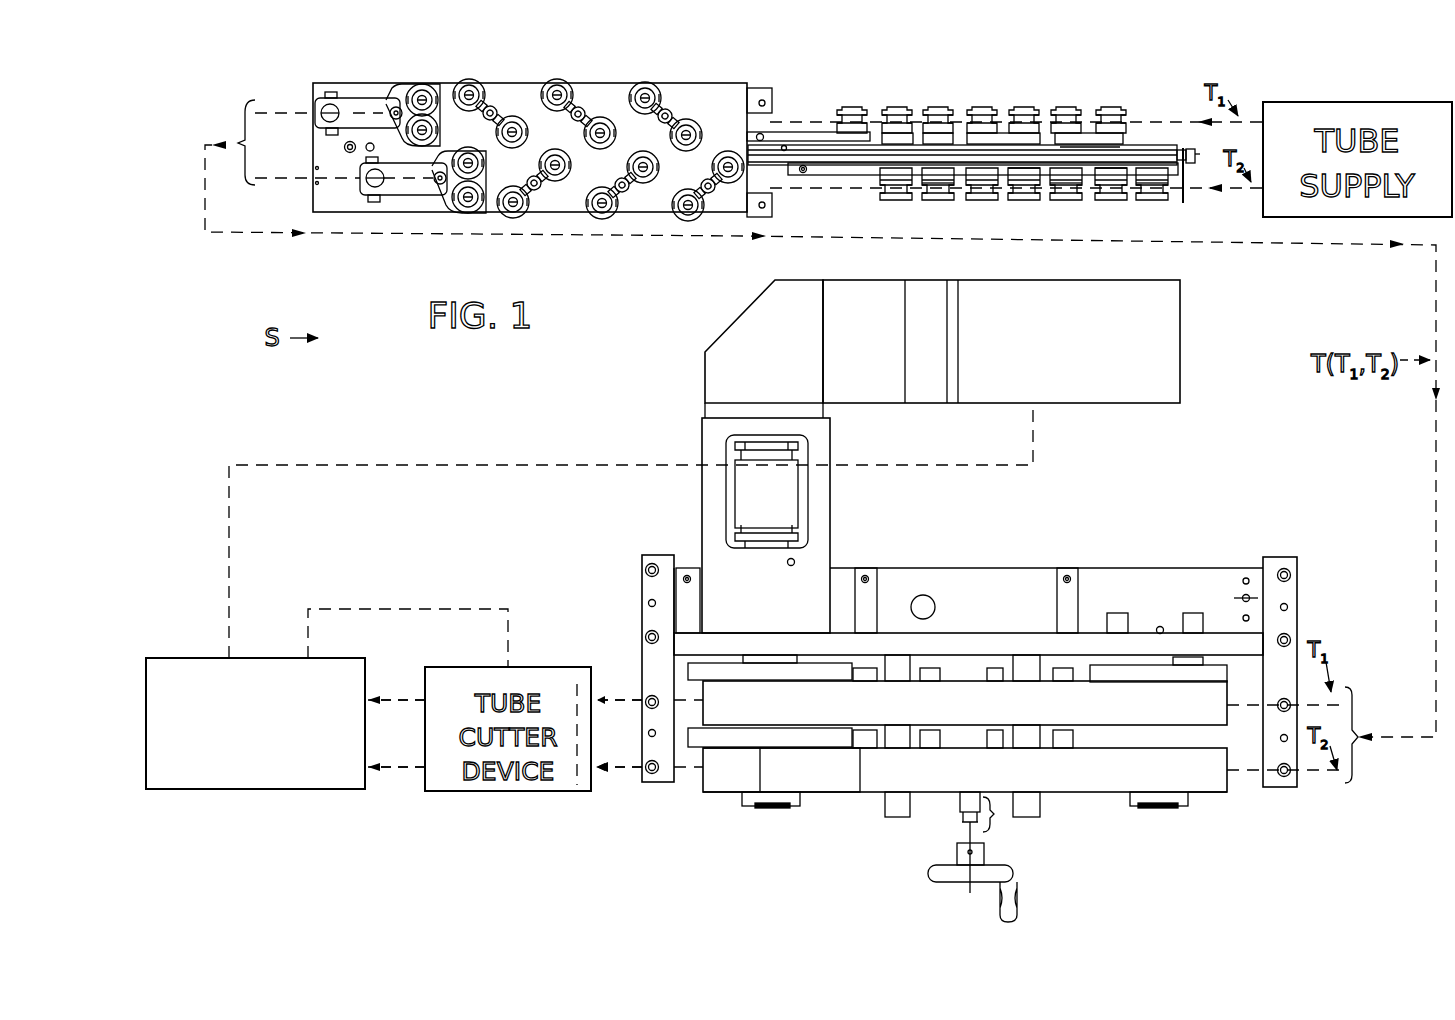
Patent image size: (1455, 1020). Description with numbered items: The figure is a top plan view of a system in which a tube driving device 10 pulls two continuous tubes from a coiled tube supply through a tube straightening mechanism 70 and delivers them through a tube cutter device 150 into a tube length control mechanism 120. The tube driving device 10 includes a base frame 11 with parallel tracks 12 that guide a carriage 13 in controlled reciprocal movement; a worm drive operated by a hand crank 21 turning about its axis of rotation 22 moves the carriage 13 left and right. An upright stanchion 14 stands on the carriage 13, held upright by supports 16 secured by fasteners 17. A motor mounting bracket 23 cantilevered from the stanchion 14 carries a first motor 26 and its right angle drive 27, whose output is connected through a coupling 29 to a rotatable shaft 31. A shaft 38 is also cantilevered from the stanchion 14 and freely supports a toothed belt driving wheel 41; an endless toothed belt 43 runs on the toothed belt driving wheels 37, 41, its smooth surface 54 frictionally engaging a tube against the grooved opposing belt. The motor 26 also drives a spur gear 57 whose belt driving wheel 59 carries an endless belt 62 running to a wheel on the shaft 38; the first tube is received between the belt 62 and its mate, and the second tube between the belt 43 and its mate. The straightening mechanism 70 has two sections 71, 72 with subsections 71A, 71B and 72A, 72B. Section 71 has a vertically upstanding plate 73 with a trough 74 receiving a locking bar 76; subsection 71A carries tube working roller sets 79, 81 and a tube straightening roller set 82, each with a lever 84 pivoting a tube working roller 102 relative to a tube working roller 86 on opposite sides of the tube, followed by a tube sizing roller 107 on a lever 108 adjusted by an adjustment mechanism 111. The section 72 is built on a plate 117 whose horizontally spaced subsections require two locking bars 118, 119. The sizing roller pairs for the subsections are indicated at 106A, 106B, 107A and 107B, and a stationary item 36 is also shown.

The tube driving device 10 is at (678, 388).
The base frame 11 is at (638, 551).
The parallel tracks 12 is at (678, 565).
The carriage 13 is at (1006, 582).
The upright stanchion 14 is at (955, 653).
The supports 16 is at (691, 615).
The fasteners 17 is at (688, 574).
The hand crank 21 is at (1015, 873).
The axis of rotation 22 is at (965, 890).
The motor mounting bracket 23 is at (712, 448).
The first motor 26 is at (1180, 332).
The right angle drive 27 is at (752, 335).
The coupling 29 is at (786, 491).
The rotatable shaft 31 is at (767, 548).
The bar section 36 is at (740, 738).
The toothed belt driving wheel 37 is at (722, 795).
The shaft 38 is at (1168, 662).
The toothed belt driving wheel 41 is at (1220, 797).
The endless toothed belt 43 is at (972, 770).
The belt surface 54 is at (815, 773).
The spur gear 57 is at (697, 670).
The belt driving wheel 59 is at (712, 731).
The endless belt 62 is at (960, 710).
The tube straightening mechanism 70 is at (410, 252).
The section 71 is at (1070, 90).
The subsection 71A is at (1003, 209).
The subsection 71B is at (982, 102).
The section 72 is at (735, 76).
The subsection 72A is at (652, 215).
The subsection 72B is at (603, 99).
The vertically upstanding plate 73 is at (1153, 147).
The trough 74 is at (1092, 156).
The locking bar 76 is at (1184, 206).
The tube working roller set 79 is at (1166, 214).
The tube working roller set 81 is at (1062, 218).
The tube straightening roller set 82 is at (924, 211).
The lever 84 is at (1030, 201).
The tube working roller 86 is at (963, 205).
The tube working roller 102 is at (942, 196).
The lower adjusting arm 106A is at (433, 196).
The upper adjusting arm 106B is at (393, 126).
The tube sizing roller 107 is at (882, 193).
The lower straightener roller pair 107A is at (471, 214).
The upper straightener roller pair 107B is at (420, 84).
The lever 108 is at (848, 176).
The adjustment mechanism 111 is at (806, 176).
The plate 117 is at (706, 98).
The locking bar 118 is at (772, 100).
The locking bar 119 is at (773, 217).
The tube length control mechanism 120 is at (267, 652).
The tube cutter device 150 is at (577, 690).